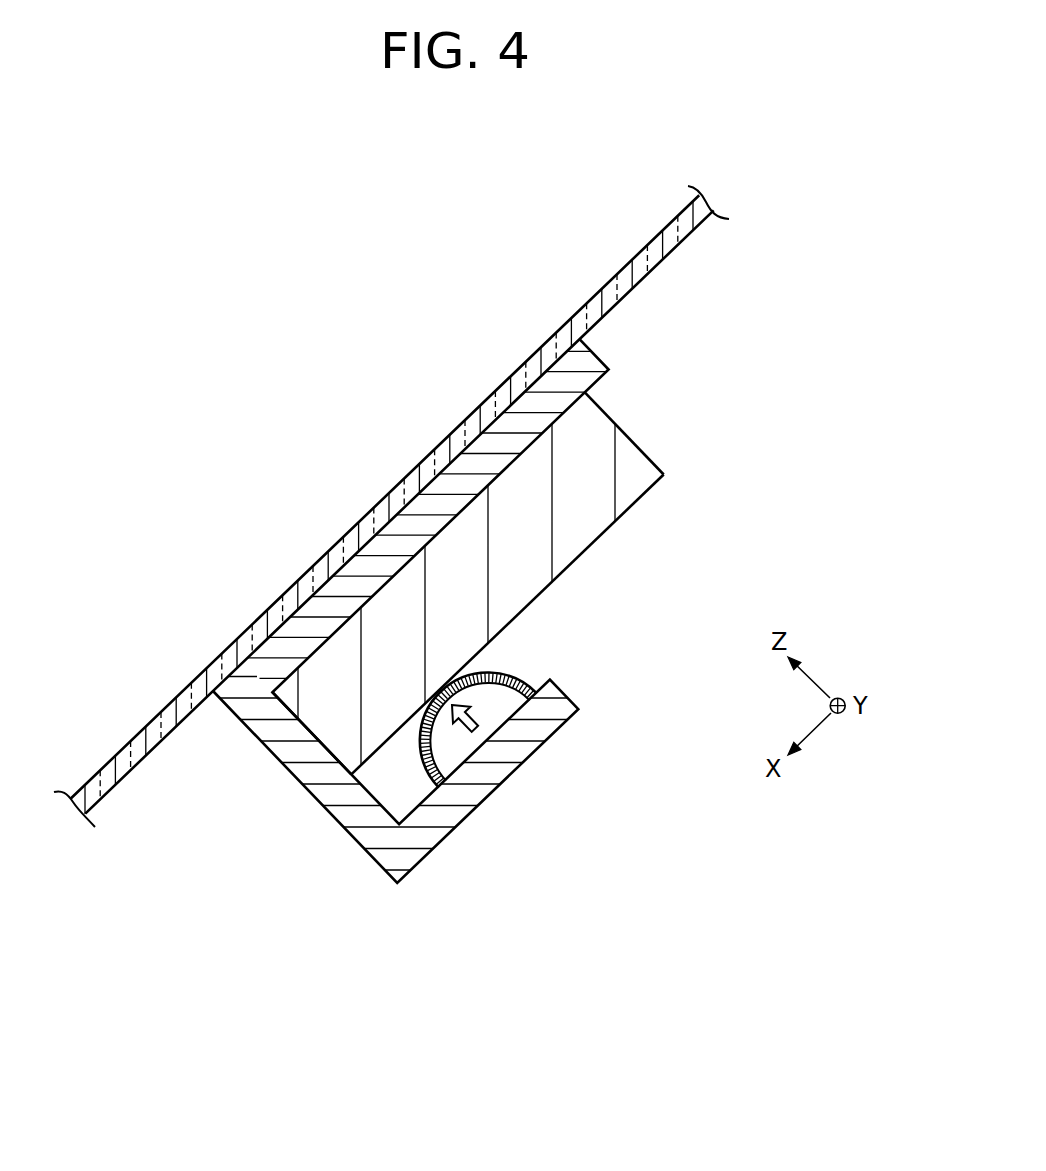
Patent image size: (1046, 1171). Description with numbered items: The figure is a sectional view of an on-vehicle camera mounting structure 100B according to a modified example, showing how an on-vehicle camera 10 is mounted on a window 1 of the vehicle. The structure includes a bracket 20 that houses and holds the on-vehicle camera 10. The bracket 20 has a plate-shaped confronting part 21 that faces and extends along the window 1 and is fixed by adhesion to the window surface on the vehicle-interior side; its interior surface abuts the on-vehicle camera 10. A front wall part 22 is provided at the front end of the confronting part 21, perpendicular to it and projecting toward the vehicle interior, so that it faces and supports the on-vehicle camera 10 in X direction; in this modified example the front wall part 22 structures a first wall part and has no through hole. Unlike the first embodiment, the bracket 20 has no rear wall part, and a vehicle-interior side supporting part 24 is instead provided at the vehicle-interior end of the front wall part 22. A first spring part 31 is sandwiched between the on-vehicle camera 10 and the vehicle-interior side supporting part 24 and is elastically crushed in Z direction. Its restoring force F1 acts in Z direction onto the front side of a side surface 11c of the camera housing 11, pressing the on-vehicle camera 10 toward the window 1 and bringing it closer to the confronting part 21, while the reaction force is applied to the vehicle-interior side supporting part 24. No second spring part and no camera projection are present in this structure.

The on-vehicle camera mounting structure 100B is at (377, 309).
The window 1 is at (232, 643).
The on-vehicle camera 10 is at (652, 501).
The camera housing 11 is at (620, 427).
The side surface of the camera housing 11c is at (595, 542).
The bracket 20 is at (290, 887).
The confronting part 21 is at (379, 510).
The front wall part 22 is at (283, 776).
The vehicle-interior side supporting part 24 is at (506, 792).
The first spring part 31 is at (515, 664).
The force F1 is at (490, 722).